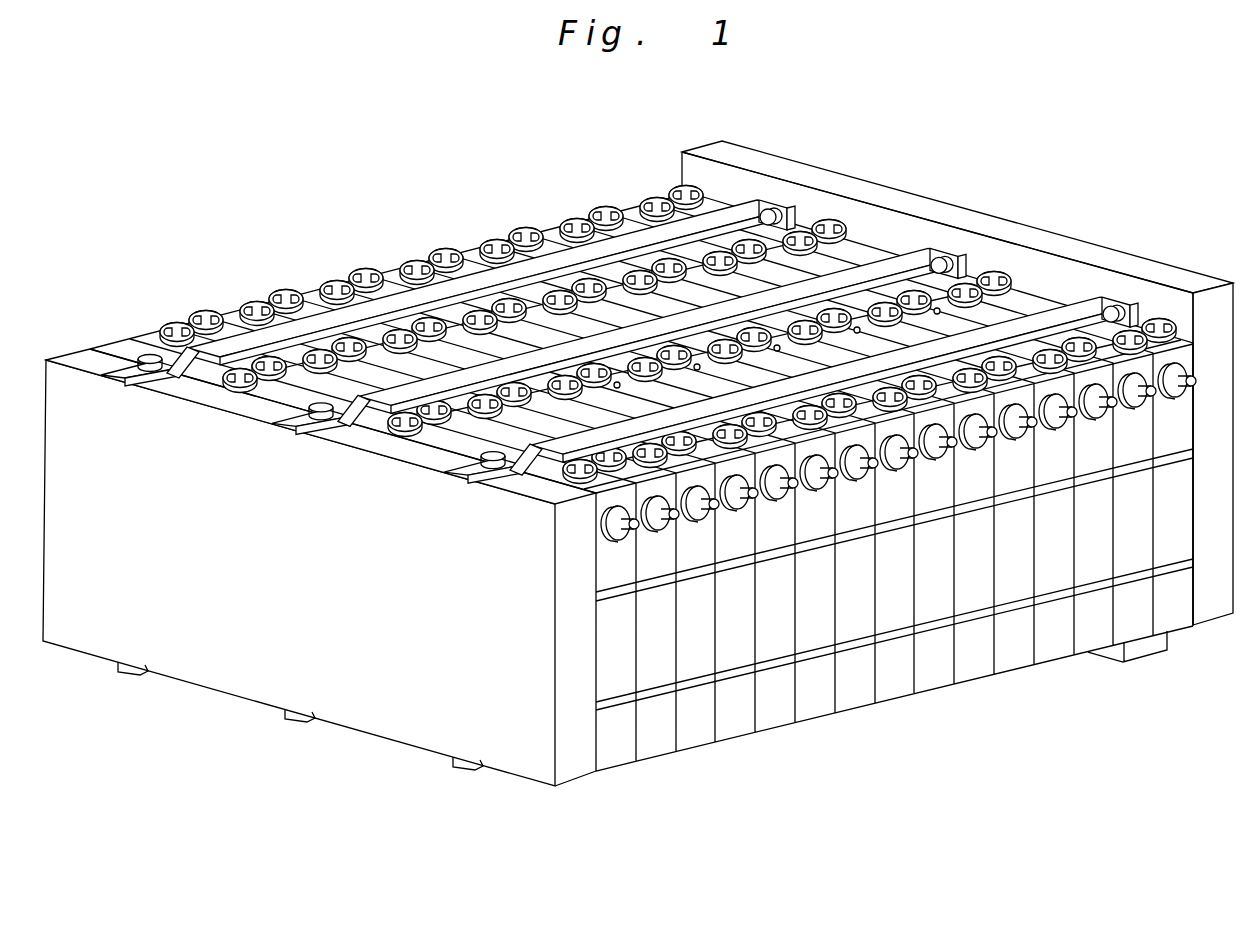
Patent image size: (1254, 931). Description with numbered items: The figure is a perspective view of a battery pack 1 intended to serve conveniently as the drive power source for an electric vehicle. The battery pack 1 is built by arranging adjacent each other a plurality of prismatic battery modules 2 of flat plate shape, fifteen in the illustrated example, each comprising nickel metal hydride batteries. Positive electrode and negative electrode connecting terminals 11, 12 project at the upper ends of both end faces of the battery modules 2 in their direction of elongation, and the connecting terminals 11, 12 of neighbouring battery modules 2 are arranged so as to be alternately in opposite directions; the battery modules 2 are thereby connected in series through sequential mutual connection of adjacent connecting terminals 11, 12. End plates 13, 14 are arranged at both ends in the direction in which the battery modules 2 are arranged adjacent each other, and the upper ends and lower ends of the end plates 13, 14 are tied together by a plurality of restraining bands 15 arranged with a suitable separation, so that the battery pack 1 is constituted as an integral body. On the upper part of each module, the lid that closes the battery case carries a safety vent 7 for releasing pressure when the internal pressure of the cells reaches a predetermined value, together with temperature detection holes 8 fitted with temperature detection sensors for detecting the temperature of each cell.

The battery pack 1 is at (638, 453).
The battery module 2 is at (277, 312).
The safety vent 7 is at (633, 275).
The temperature detection hole 8 is at (783, 350).
The positive electrode connecting terminal 11 is at (623, 530).
The negative electrode connecting terminal 12 is at (665, 512).
The end plate 13 is at (1025, 262).
The end plate 14 is at (520, 703).
The restraining band 15 is at (553, 437).